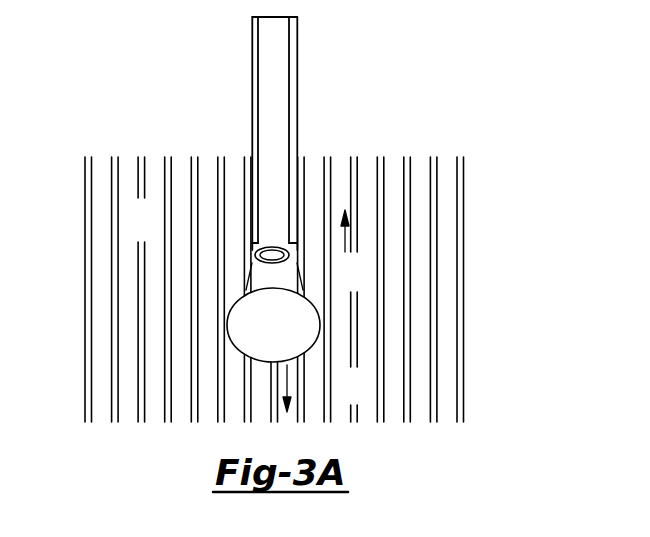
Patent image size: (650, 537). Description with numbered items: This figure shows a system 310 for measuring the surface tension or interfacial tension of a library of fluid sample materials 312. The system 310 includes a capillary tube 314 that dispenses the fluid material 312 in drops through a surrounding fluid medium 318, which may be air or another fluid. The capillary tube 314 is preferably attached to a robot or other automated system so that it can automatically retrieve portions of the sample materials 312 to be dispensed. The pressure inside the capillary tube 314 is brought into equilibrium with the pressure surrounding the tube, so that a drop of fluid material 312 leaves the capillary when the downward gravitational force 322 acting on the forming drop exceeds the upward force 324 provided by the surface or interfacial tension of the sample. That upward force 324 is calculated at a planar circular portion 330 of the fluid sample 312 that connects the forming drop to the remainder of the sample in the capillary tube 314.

The system 310 is at (340, 282).
The fluid sample material 312 is at (268, 133).
The capillary tube 314 is at (252, 95).
The fluid medium 318 is at (162, 236).
The downward gravitational force 322 is at (351, 403).
The upward force 324 is at (363, 284).
The planar circular portion 330 is at (315, 255).